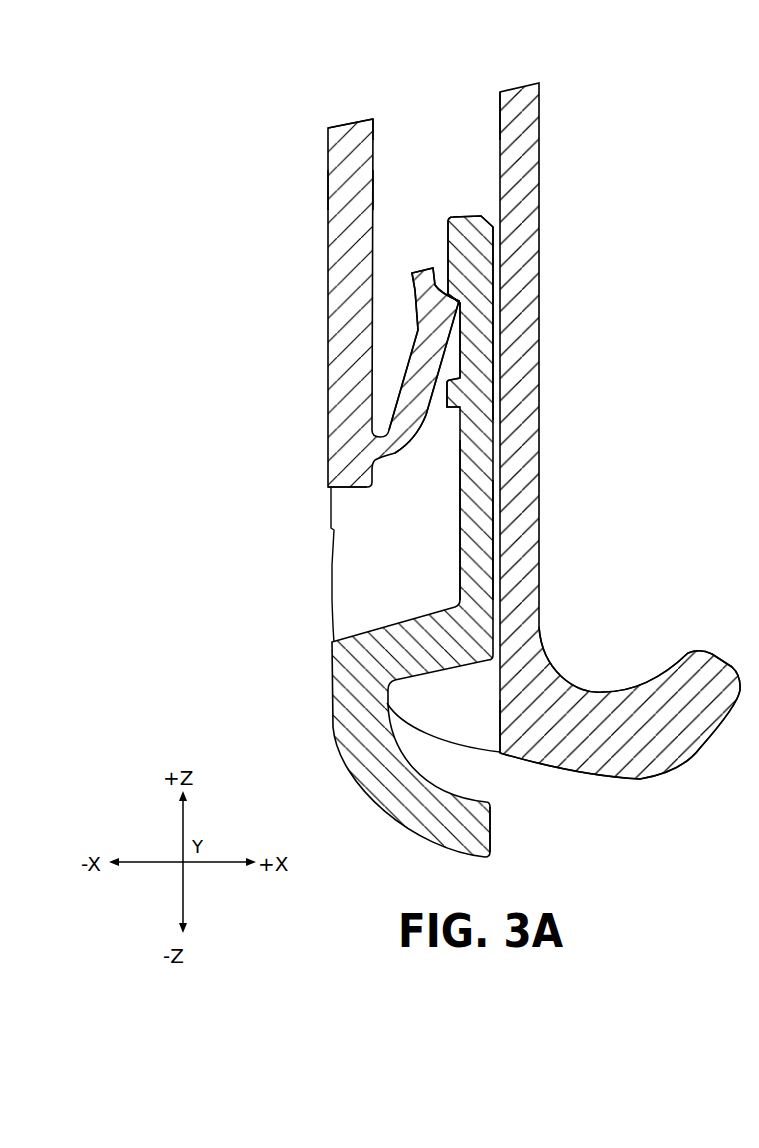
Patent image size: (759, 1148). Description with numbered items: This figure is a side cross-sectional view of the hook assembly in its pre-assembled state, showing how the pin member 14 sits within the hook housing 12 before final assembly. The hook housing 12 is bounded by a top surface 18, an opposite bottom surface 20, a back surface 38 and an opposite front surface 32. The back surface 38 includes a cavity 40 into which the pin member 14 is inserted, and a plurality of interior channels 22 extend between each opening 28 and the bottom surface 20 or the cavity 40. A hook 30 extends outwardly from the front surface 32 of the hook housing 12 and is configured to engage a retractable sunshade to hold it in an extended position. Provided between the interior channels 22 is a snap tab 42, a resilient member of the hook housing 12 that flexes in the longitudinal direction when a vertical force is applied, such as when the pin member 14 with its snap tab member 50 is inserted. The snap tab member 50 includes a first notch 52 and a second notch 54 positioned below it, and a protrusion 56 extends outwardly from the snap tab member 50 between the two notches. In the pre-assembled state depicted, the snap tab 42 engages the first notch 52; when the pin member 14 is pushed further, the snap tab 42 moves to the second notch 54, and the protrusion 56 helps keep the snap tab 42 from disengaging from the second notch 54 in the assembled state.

The hook housing 12 is at (288, 297).
The pin member 14 is at (316, 767).
The top surface 18 is at (353, 122).
The bottom surface 20 is at (498, 760).
The interior channels 22 is at (400, 188).
The opening 28 is at (432, 116).
The hook 30 is at (713, 667).
The front surface 32 is at (528, 262).
The back surface 38 is at (331, 512).
The cavity 40 is at (357, 610).
The snap tab 42 is at (435, 320).
The snap tab member 50 is at (480, 548).
The first notch 52 is at (462, 337).
The second notch 54 is at (463, 478).
The protrusion 56 is at (450, 396).